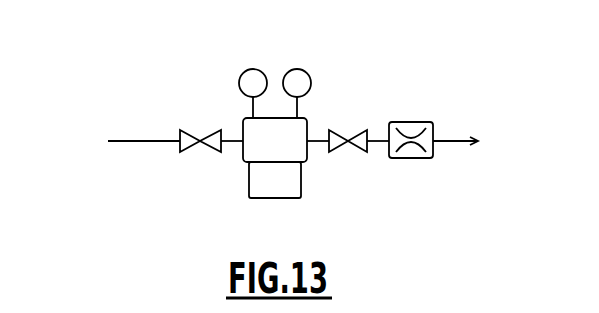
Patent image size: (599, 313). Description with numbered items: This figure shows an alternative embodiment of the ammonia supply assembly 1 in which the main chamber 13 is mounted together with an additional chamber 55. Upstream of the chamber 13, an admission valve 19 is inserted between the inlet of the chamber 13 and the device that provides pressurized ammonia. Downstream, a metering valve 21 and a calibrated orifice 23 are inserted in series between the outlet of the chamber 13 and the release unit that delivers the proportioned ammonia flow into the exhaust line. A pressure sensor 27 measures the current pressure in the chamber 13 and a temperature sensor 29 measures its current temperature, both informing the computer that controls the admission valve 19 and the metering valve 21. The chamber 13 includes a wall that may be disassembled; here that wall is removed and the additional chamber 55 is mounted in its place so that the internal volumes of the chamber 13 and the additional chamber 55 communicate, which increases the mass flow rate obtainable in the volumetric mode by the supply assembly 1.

The assembly 1 is at (113, 89).
The chamber 13 is at (300, 126).
The admission valve 19 is at (197, 130).
The metering valve 21 is at (352, 131).
The calibrated orifice 23 is at (411, 122).
The pressure sensor 27 is at (242, 93).
The temperature sensor 29 is at (309, 77).
The additional chamber 55 is at (255, 185).